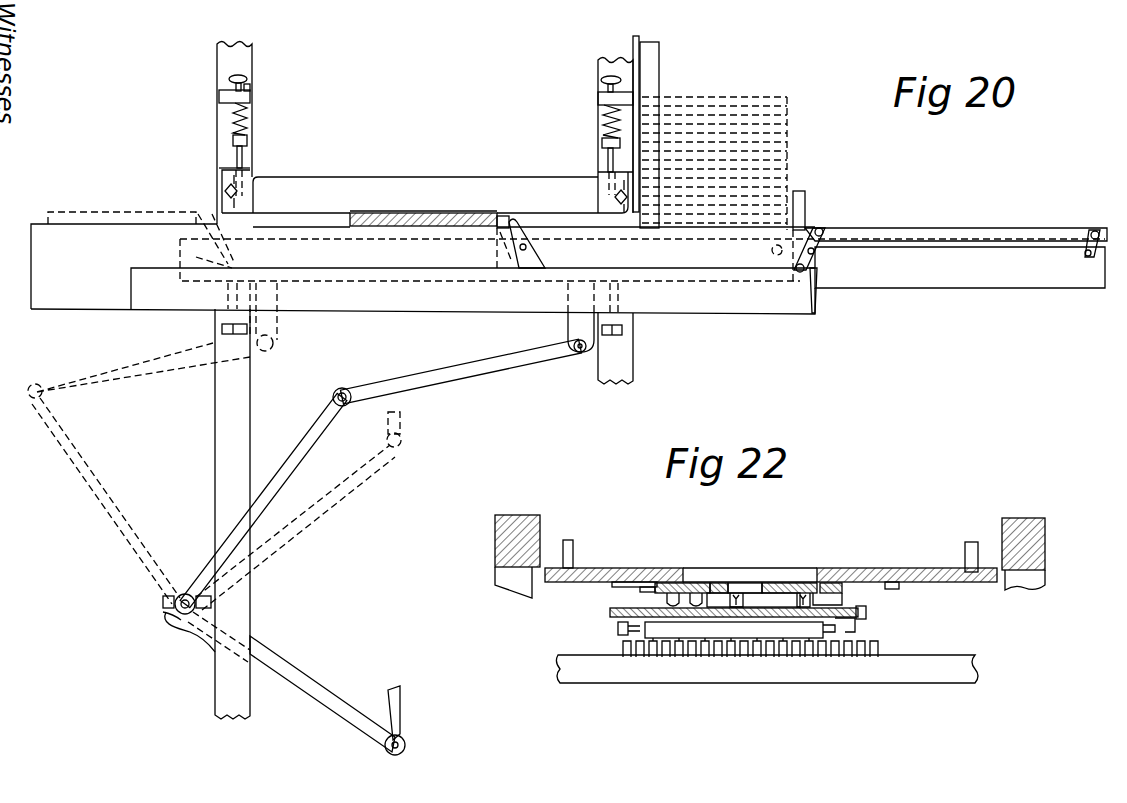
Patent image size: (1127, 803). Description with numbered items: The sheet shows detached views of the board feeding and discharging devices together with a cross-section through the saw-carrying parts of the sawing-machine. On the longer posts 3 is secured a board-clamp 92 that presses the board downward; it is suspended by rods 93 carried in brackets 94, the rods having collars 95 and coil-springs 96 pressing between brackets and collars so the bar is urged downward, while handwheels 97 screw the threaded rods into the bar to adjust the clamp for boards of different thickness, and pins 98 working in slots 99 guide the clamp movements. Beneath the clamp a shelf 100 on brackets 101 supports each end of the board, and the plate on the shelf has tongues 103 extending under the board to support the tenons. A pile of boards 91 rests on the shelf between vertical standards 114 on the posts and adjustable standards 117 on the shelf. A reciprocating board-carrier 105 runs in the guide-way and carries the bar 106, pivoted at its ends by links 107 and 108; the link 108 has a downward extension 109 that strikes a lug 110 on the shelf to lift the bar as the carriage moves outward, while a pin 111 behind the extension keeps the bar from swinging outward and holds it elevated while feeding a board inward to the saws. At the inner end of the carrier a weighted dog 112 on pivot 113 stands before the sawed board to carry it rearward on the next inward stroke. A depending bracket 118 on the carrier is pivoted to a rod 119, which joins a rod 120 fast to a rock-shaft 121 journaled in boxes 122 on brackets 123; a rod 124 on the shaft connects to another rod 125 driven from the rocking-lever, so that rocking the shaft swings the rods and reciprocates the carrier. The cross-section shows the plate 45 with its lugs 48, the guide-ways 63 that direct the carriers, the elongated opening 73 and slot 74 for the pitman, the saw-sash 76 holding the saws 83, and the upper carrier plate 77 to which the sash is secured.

In FIG. 20, the longer posts 3 is at (215, 441).
In FIG. 22, the longer posts 3 is at (493, 548).
In FIG. 20, the stack of sheets 91 is at (410, 213).
In FIG. 20, the board-clamp 92 is at (380, 212).
In FIG. 22, the board-clamp 92 is at (922, 683).
In FIG. 20, the rods 93 is at (249, 87).
In FIG. 20, the brackets 94 is at (219, 96).
In FIG. 20, the collars 95 is at (248, 140).
In FIG. 20, the coil-springs 96 is at (249, 116).
In FIG. 20, the handwheels 97 is at (241, 78).
In FIG. 20, the pins 98 is at (606, 141).
In FIG. 20, the slots 99 is at (615, 197).
In FIG. 20, the shelf 100 is at (312, 222).
In FIG. 20, the brackets 101 is at (220, 318).
In FIG. 20, the board-carrier 105 is at (985, 290).
In FIG. 20, the board-engaging device 106 is at (950, 228).
In FIG. 20, the link 107 is at (1091, 235).
In FIG. 20, the link 108 is at (824, 235).
In FIG. 20, the downward extension 109 is at (816, 305).
In FIG. 20, the lug 110 is at (818, 270).
In FIG. 20, the pin 111 is at (798, 272).
In FIG. 20, the dog 112 is at (513, 220).
In FIG. 20, the pivot 113 is at (526, 244).
In FIG. 20, the vertical standards 114 is at (660, 60).
In FIG. 20, the adjustable standards 117 is at (805, 195).
In FIG. 20, the depending bracket 118 is at (274, 340).
In FIG. 20, the rod 119 is at (105, 386).
In FIG. 20, the rod 120 is at (306, 450).
In FIG. 20, the rock-shaft 121 is at (178, 614).
In FIG. 20, the boxes 122 is at (165, 603).
In FIG. 20, the brackets 123 is at (185, 640).
In FIG. 20, the rod 124 is at (105, 470).
In FIG. 20, the rod 125 is at (404, 430).
In FIG. 22, the plate 45 is at (888, 570).
In FIG. 22, the lugs 48 is at (575, 540).
In FIG. 22, the guide-ways 63 is at (690, 595).
In FIG. 22, the vertically elongated opening 73 is at (786, 568).
In FIG. 22, the longitudinal slot 74 is at (744, 583).
In FIG. 22, the saw-sashes 76 is at (655, 632).
In FIG. 22, the upper carrier plate 77 is at (610, 612).
In FIG. 22, the saws 83 is at (673, 656).
In FIG. 22, the tongues 103 is at (626, 655).